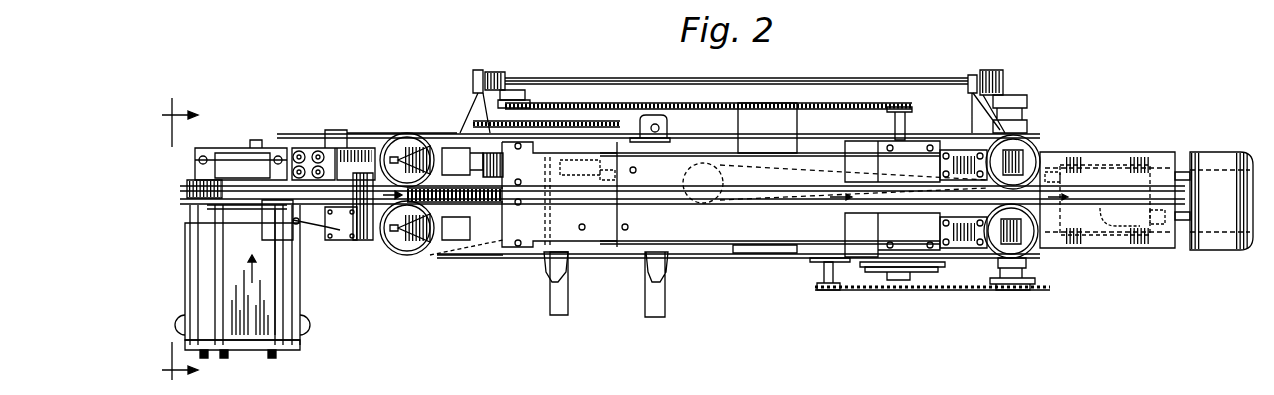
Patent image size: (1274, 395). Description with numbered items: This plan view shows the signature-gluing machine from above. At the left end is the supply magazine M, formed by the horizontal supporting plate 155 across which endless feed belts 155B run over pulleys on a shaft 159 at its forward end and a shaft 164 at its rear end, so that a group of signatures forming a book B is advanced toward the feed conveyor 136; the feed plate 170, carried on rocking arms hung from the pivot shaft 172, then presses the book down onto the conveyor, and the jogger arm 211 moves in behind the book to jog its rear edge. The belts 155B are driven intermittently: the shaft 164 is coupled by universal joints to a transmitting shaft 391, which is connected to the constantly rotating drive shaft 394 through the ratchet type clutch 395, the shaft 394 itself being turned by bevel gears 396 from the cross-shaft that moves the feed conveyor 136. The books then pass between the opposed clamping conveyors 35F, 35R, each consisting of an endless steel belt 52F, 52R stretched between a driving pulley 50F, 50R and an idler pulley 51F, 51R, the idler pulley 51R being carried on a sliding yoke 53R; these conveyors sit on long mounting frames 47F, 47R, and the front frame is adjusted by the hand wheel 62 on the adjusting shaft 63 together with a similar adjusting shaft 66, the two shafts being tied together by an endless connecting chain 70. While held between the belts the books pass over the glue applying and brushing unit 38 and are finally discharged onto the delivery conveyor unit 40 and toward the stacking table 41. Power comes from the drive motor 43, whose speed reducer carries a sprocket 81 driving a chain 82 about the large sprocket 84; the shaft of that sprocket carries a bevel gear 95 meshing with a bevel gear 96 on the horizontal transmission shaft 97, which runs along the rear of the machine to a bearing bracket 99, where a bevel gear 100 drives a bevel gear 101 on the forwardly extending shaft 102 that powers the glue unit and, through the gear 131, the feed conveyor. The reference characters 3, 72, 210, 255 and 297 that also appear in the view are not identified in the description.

The section line 3- 3 is at (180, 243).
The rear clamping conveyor 35R is at (913, 127).
The front clamping conveyor 35F is at (698, 263).
The glue applying and brushing unit 38 is at (670, 130).
The delivery conveyor unit 40 is at (1103, 150).
The final stacking table 41 is at (1203, 152).
The drive motor 43 is at (827, 263).
The rear mounting frame 47R is at (808, 155).
The front mounting frame 47F is at (682, 242).
The rear driving pulley 50R is at (1037, 138).
The front driving pulley 50F is at (1038, 250).
The rear idler pulley 51R is at (396, 135).
The front idler pulley 51F is at (410, 255).
The rear endless steel belt 52R is at (748, 138).
The front endless steel belt 52F is at (722, 260).
The yoke 53R is at (422, 148).
The operating hand wheel 62 is at (930, 273).
The adjusting shaft 63 is at (885, 123).
The adjusting shaft 66 is at (542, 120).
The endless connecting chain 70 is at (678, 103).
The plate 72 is at (885, 290).
The sprocket 81 is at (818, 292).
The chain 82 is at (968, 289).
The large sprocket 84 is at (1042, 289).
The bevel gear 95 is at (1022, 95).
The bevel gear 96 is at (1000, 73).
The transmission shaft 97 is at (838, 76).
The bearing bracket 99 is at (475, 80).
The bevel gear 100 is at (507, 72).
The bevel gear 101 is at (525, 97).
The forwardly extending shaft 102 is at (550, 105).
The gear 131 is at (475, 172).
The feed conveyor 136 is at (186, 192).
The supporting plate 155 is at (250, 362).
The feed belts 155B is at (273, 280).
The shaft 159 is at (240, 350).
The shaft 164 is at (250, 222).
The feed plate 170 is at (675, 393).
The pivot shaft 172 is at (233, 148).
The roller assembly 210 is at (308, 147).
The jogger arm 211 is at (305, 193).
The bracket 255 is at (545, 272).
The hanger 297 is at (648, 305).
The transmitting shaft 391 is at (313, 227).
The drive shaft 394 is at (383, 250).
The ratchet type clutch 395 is at (367, 250).
The bevel gears 396 is at (465, 240).
The supply magazine M is at (300, 307).
The book B is at (755, 394).